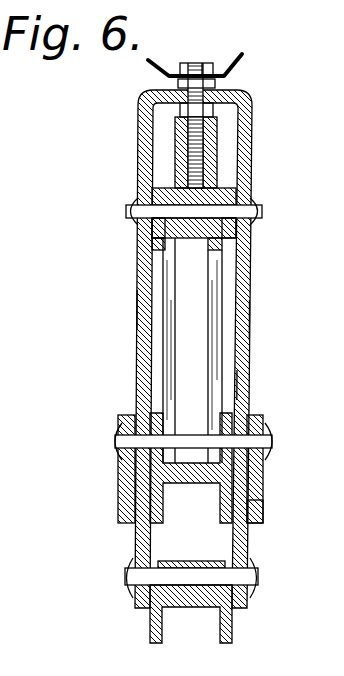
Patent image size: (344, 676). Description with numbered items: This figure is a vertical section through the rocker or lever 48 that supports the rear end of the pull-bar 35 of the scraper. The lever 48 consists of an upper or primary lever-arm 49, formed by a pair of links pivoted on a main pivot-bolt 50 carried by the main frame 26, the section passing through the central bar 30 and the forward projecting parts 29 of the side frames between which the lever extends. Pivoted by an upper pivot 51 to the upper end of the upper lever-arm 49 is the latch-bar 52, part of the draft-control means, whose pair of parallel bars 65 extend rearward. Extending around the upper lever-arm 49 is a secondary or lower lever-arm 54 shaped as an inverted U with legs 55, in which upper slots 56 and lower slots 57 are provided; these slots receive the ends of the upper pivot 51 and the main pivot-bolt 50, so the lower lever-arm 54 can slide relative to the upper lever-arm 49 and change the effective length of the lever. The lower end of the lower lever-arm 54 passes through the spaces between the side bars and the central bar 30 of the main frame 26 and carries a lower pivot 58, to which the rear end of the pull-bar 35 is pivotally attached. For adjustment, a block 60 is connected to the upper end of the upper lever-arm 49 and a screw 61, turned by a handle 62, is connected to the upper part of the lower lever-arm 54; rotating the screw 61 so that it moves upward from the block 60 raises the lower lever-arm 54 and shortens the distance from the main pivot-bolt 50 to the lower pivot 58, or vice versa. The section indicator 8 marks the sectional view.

The section line 8 is at (317, 256).
The main frame 26 is at (125, 502).
The forward projecting parts 29 is at (257, 518).
The central bar 30 is at (200, 468).
The pull-bar 35 is at (200, 590).
The lever 48 is at (235, 322).
The upper lever-arm 49 is at (168, 382).
The main pivot-bolt 50 is at (143, 448).
The upper pivot 51 is at (218, 212).
The latch-bar 52 is at (150, 197).
The lower lever-arm 54 is at (142, 348).
The legs 55 is at (140, 307).
The upper slots 56 is at (248, 267).
The lower slots 57 is at (240, 492).
The lower pivot 58 is at (232, 578).
The block 60 is at (203, 150).
The screw 61 is at (207, 122).
The handle 62 is at (158, 67).
The parallel bars 65 is at (222, 232).